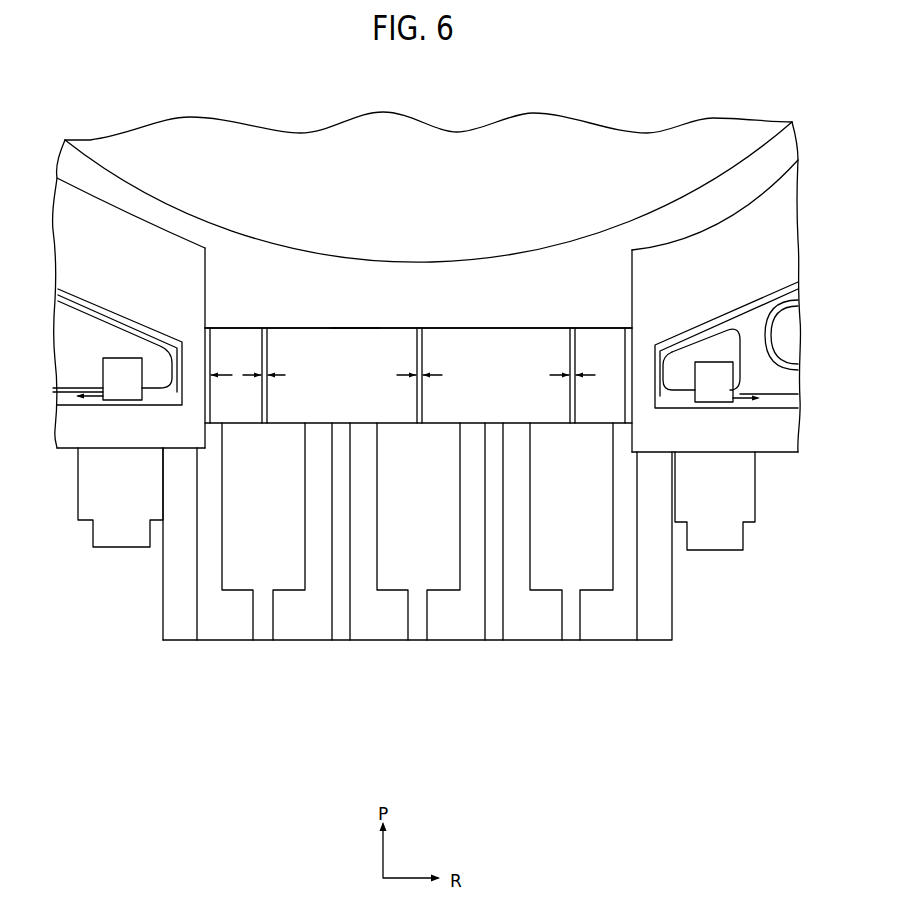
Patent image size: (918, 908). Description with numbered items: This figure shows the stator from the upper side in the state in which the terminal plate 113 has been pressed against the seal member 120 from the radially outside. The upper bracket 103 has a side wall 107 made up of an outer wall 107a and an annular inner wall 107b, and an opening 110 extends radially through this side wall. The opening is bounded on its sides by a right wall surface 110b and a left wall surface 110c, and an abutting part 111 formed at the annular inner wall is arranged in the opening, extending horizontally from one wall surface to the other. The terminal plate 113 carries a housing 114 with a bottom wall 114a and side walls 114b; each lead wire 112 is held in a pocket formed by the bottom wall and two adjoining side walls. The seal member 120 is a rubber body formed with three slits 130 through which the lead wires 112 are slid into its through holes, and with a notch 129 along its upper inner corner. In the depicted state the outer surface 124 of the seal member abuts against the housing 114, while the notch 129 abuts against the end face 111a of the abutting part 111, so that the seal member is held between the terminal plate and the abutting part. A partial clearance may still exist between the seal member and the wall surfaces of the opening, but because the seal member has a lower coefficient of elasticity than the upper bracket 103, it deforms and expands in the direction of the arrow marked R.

The upper bracket 103 is at (780, 457).
The side wall 107 is at (108, 472).
The outer wall 107a is at (122, 432).
The annular inner wall 107b is at (107, 270).
The opening 110 is at (210, 308).
The right wall surface 110b is at (633, 280).
The left wall surface 110c is at (206, 274).
The abutting part 111 is at (418, 273).
The end face of abutting part 111a is at (362, 328).
The lead wire 112 is at (552, 572).
The terminal plate 113 is at (183, 643).
The housing 114 is at (425, 611).
The bottom wall 114a is at (608, 630).
The side wall of housing 114b is at (657, 632).
The seal member 120 is at (512, 326).
The outer surface 124 is at (340, 424).
The notch part 129 is at (460, 330).
The slit 130 is at (262, 352).